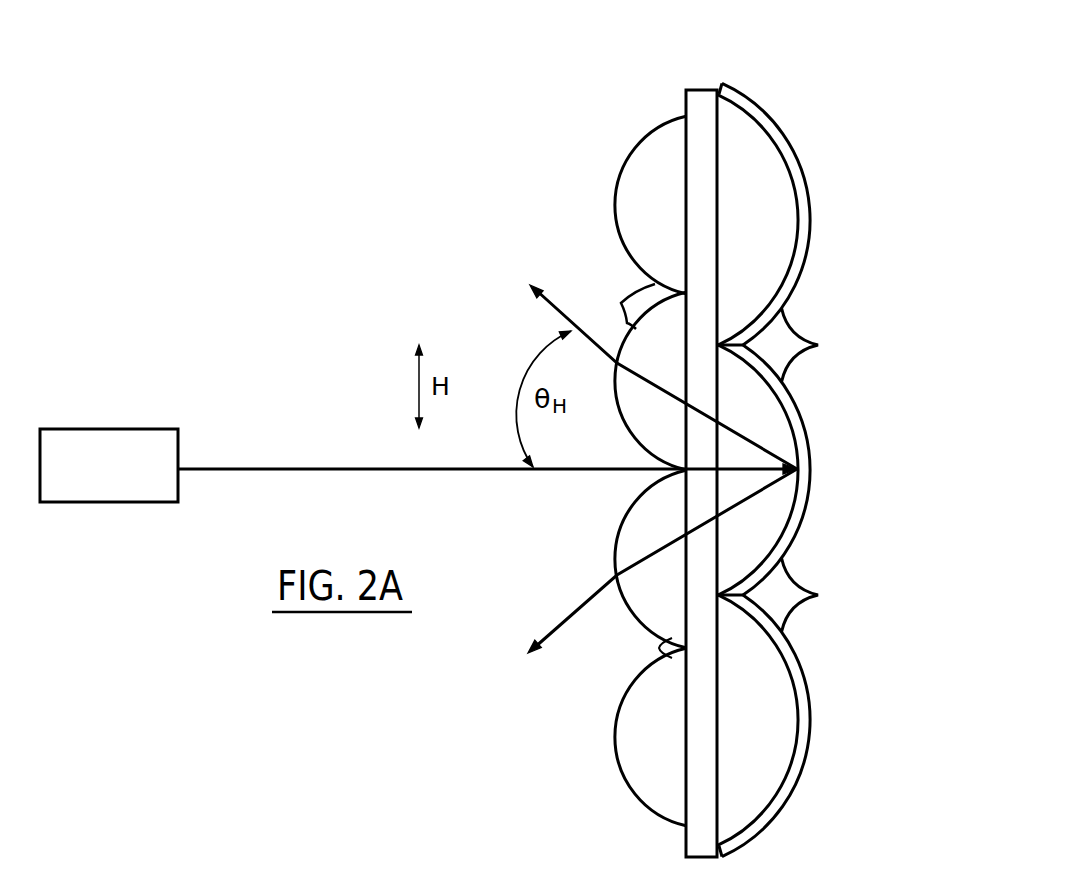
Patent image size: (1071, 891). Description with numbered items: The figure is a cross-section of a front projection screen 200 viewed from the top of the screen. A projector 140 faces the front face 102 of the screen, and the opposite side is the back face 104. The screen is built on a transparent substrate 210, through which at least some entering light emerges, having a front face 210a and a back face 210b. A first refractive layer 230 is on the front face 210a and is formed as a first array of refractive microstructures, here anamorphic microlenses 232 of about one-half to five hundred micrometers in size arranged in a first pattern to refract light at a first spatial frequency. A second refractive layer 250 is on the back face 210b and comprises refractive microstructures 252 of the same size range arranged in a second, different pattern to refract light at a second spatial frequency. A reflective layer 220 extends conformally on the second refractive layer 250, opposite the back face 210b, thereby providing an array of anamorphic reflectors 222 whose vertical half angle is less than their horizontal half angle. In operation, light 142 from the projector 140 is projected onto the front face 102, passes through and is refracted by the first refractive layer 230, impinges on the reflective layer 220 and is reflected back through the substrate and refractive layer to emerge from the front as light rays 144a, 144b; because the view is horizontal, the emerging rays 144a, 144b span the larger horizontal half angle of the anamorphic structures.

The front face 102 is at (502, 245).
The back face 104 is at (852, 318).
The projector 140 is at (110, 429).
The light 142 is at (278, 468).
The light rays 144a is at (549, 306).
The light rays 144b is at (572, 613).
The projection screen 200 is at (866, 182).
The transparent substrate 210 is at (705, 90).
The front face of the substrate 210a is at (684, 217).
The back face of the substrate 210b is at (742, 191).
The reflective layer 220 is at (768, 113).
The anamorphic reflectors 222 is at (819, 351).
The first refractive layer 230 is at (638, 115).
The anamorphic microlenses 232 is at (619, 305).
The second refractive layer 250 is at (777, 222).
The refractive microstructures 252 is at (750, 542).